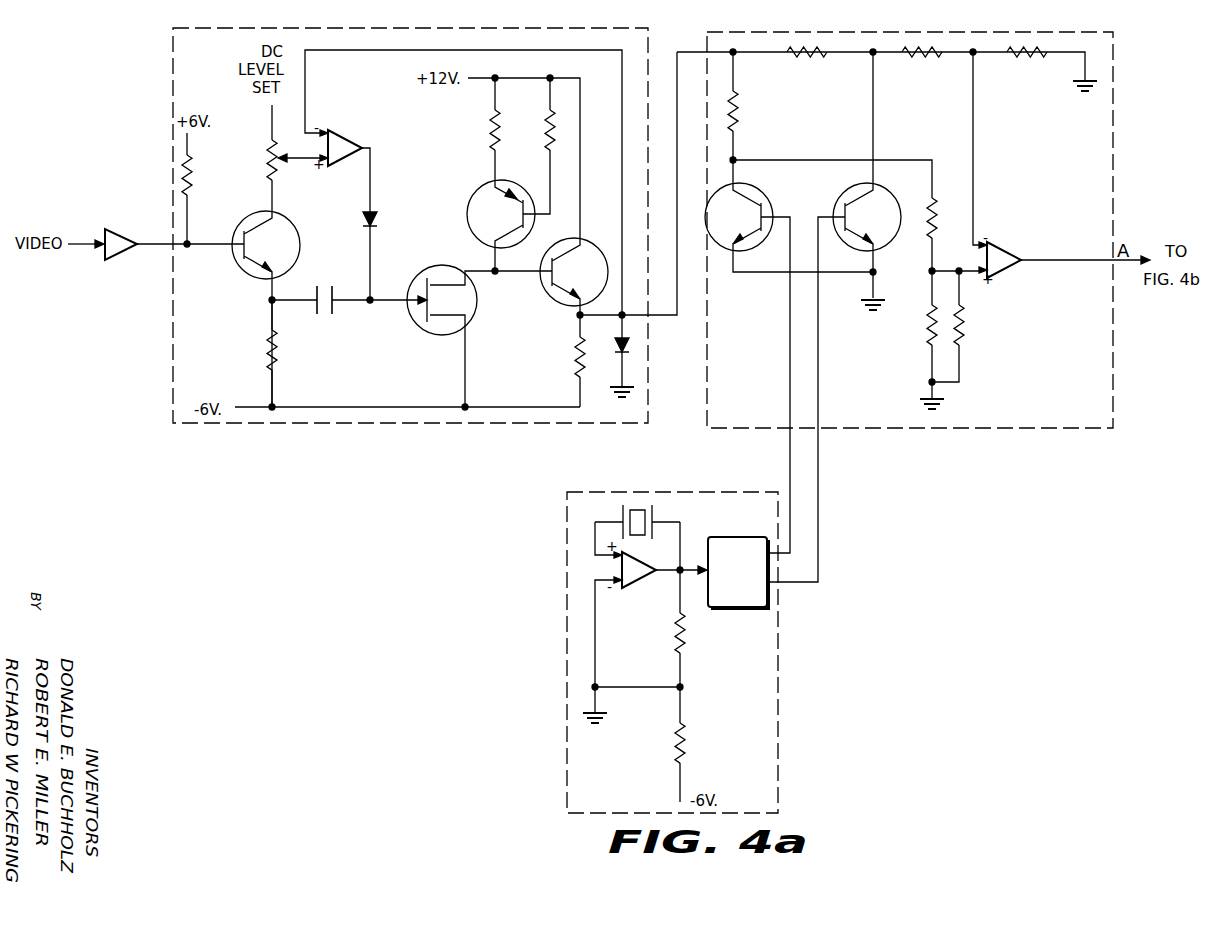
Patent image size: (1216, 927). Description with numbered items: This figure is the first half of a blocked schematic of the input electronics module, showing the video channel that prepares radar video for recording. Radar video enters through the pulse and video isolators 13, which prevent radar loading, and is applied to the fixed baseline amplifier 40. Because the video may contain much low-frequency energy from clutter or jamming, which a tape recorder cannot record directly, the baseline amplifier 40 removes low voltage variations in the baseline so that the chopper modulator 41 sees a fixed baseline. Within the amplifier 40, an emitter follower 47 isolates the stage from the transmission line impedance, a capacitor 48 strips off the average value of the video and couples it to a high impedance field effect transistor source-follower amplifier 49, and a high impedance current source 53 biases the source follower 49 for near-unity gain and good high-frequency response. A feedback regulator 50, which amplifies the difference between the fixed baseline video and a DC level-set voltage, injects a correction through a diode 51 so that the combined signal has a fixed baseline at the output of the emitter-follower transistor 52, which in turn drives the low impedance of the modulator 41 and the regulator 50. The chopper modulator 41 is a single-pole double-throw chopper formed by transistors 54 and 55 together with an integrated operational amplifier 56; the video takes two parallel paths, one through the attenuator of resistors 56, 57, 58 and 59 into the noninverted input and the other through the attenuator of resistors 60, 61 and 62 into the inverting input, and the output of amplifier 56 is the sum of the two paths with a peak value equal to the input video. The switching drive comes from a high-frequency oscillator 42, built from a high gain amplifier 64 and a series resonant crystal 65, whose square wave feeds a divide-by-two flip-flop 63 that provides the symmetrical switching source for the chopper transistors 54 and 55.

The pulse and video isolators 13 is at (110, 236).
The fixed baseline amplifier 40 is at (173, 65).
The chopper modulator 41 is at (1115, 152).
The high-frequency oscillator 42 is at (648, 492).
The emitter follower 47 is at (289, 224).
The capacitor 48 is at (335, 310).
The field effect transistor source-follower amplifier 49 is at (462, 266).
The feedback regulator 50 is at (340, 141).
The diode 51 is at (378, 217).
The emitter-follower transistor 52 is at (566, 302).
The high impedance current source 53 is at (480, 196).
The chopper transistor 54 is at (768, 191).
The chopper transistor 55 is at (878, 191).
The integrated operational amplifier 56 is at (740, 118).
The resistor 57 is at (935, 203).
The resistor 58 is at (926, 338).
The resistor 59 is at (967, 331).
The resistor 60 is at (797, 58).
The resistor 61 is at (905, 58).
The resistor 62 is at (1013, 58).
The divide-by-two flip-flop 63 is at (730, 537).
The high gain amplifier 64 is at (628, 588).
The series resonant crystal 65 is at (656, 506).